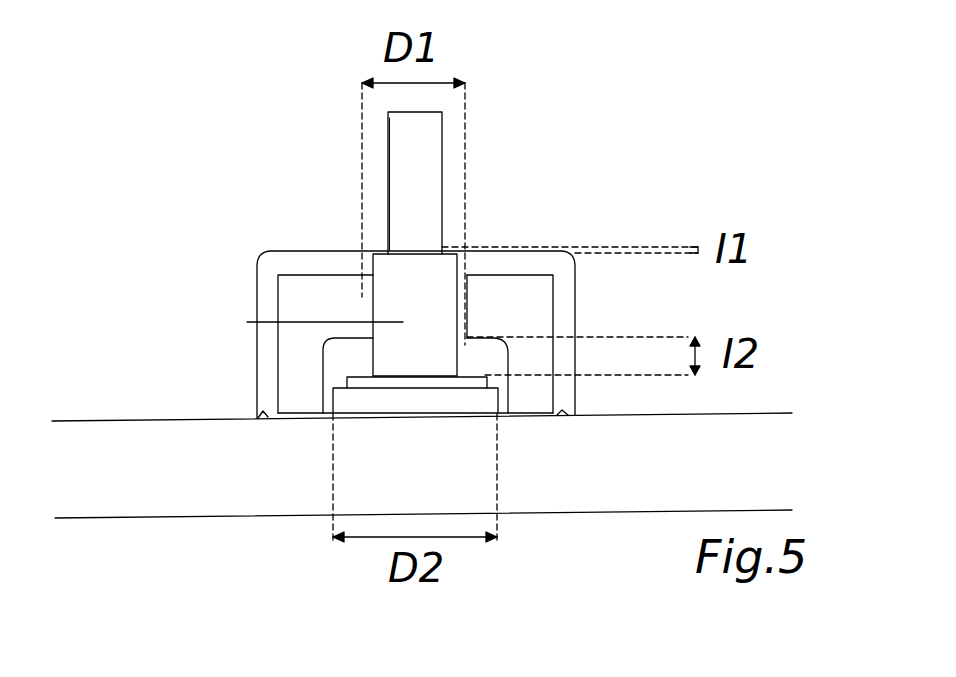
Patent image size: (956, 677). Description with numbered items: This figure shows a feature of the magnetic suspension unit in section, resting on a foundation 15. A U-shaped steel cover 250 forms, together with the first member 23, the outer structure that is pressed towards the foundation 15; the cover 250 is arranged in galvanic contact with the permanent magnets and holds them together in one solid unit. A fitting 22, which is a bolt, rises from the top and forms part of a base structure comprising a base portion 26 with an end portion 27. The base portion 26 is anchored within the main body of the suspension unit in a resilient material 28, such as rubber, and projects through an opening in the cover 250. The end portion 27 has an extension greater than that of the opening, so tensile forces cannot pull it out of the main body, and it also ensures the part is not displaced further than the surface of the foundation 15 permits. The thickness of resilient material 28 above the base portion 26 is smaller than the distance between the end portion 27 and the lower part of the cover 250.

The foundation 15 is at (585, 473).
The fitting 22 is at (440, 112).
The first member 23 is at (265, 345).
The base portion 26 is at (247, 322).
The end portion 27 is at (348, 400).
The resilient material 28 is at (343, 360).
The U-shaped steel cover 250 is at (303, 287).